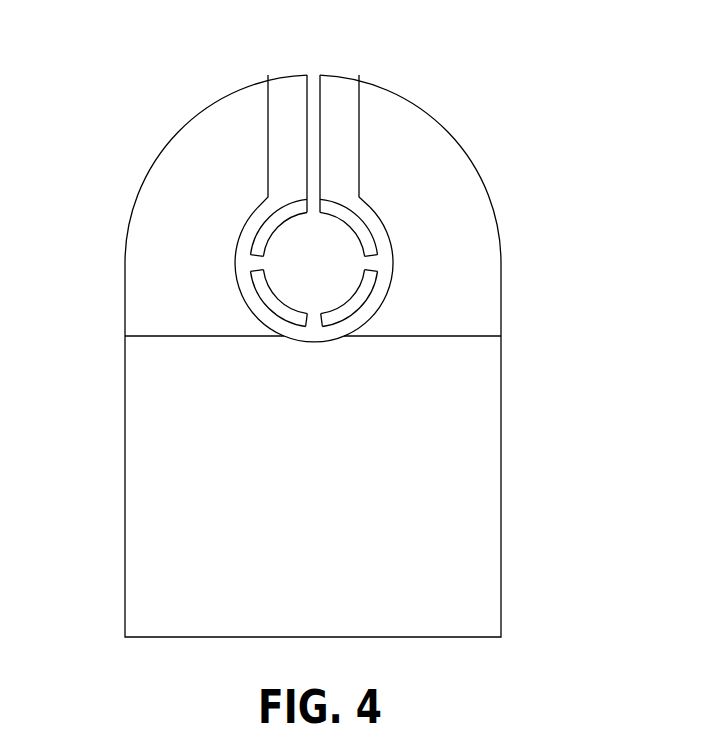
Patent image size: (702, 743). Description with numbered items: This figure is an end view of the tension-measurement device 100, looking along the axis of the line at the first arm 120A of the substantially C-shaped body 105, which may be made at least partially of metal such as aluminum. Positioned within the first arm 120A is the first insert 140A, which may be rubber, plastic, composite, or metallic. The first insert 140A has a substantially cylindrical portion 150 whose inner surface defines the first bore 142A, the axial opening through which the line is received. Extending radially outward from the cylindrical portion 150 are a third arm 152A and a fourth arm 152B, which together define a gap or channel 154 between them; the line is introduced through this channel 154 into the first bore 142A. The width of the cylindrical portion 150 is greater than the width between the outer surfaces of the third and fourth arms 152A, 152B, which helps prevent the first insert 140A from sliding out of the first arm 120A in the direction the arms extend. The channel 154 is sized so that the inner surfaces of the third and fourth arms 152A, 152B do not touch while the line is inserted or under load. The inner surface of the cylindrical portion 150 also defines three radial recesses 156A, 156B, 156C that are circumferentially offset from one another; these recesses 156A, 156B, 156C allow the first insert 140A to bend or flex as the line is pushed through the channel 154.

The tension-measurement device 100 is at (83, 76).
The body 105 is at (306, 522).
The first arm 120A is at (360, 522).
The first insert 140A is at (222, 229).
The first bore 142A is at (339, 270).
The cylindrical portion 150 is at (392, 235).
The third arm 152A is at (292, 143).
The fourth arm 152B is at (345, 145).
The channel 154 is at (322, 61).
The radial recess 156A is at (253, 262).
The radial recess 156B is at (317, 322).
The radial recess 156C is at (392, 262).